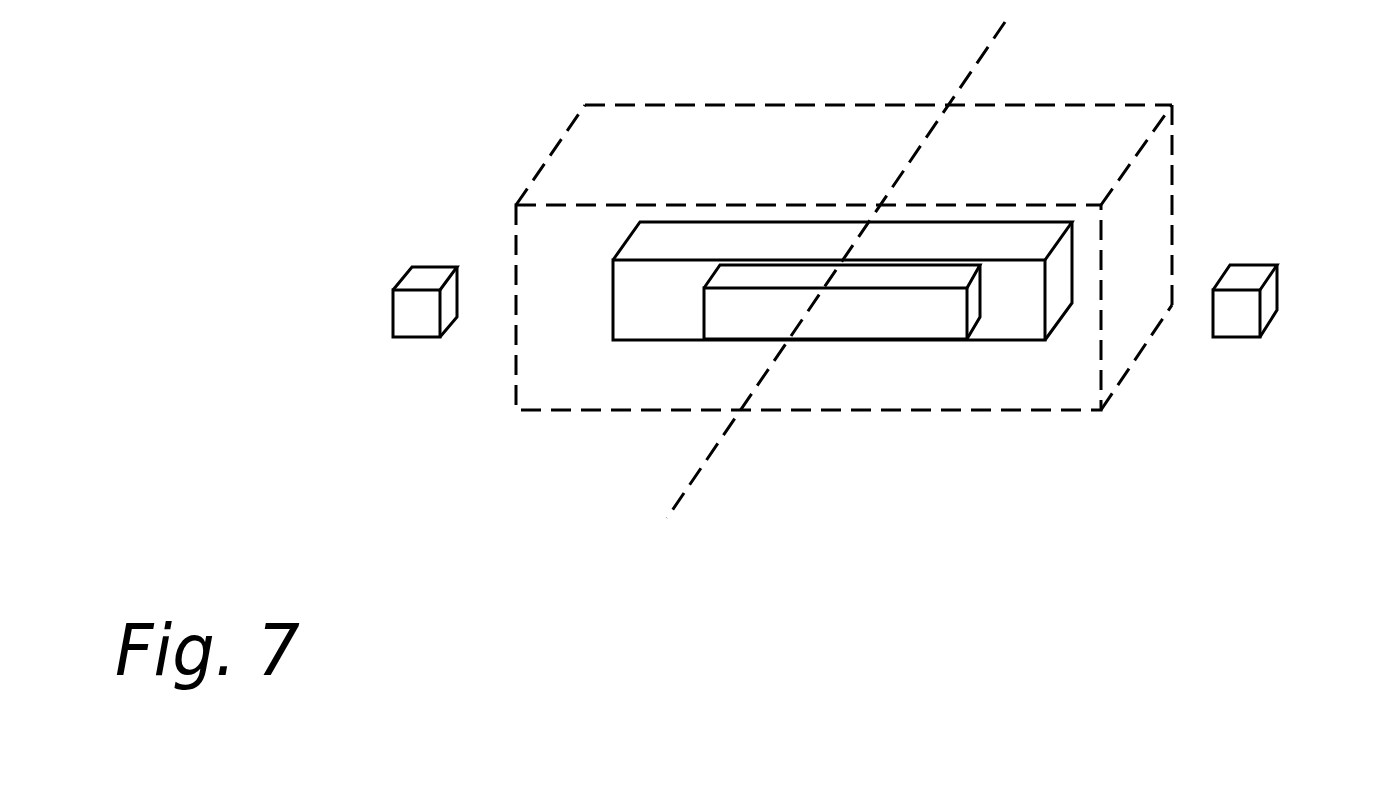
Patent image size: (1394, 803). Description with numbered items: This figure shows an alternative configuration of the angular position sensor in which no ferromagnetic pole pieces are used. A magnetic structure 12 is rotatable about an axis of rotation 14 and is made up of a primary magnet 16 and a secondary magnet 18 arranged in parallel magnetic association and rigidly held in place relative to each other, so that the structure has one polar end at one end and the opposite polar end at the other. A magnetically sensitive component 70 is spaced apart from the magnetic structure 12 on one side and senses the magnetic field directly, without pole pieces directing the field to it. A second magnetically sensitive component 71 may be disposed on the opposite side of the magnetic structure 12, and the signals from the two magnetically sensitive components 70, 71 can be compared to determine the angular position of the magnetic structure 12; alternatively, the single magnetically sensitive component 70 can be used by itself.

The magnetic structure 12 is at (577, 408).
The axis of rotation 14 is at (700, 480).
The primary magnet 16 is at (655, 237).
The secondary magnet 18 is at (892, 318).
The magnetically sensitive component 70 is at (1270, 292).
The magnetically sensitive component 71 is at (393, 312).